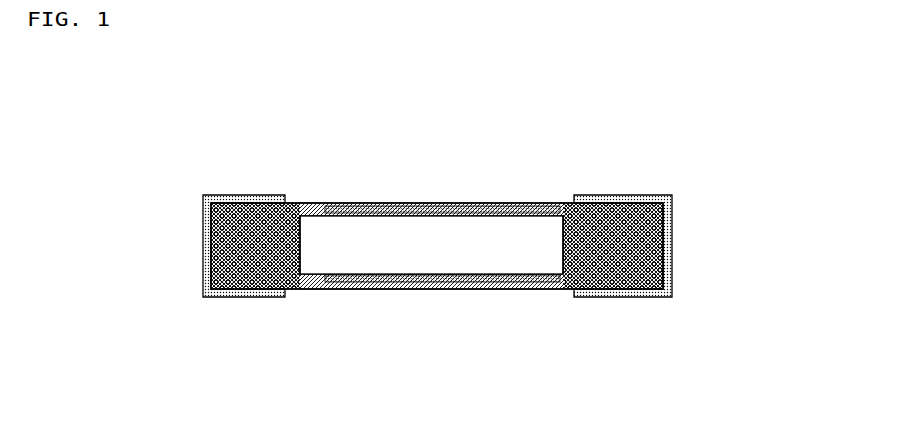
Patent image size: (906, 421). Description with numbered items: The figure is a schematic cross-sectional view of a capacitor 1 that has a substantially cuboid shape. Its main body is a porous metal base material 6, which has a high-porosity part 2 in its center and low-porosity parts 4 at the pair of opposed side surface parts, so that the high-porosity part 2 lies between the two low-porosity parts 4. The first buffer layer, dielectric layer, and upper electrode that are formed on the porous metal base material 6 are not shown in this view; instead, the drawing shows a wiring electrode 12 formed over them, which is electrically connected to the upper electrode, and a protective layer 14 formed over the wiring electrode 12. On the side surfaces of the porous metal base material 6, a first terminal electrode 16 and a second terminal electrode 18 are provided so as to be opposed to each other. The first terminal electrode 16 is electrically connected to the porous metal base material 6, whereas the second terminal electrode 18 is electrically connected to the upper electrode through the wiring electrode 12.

The capacitor 1 is at (180, 190).
The high-porosity part 2 is at (325, 222).
The low-porosity parts 4 is at (275, 210).
The porous metal base material 6 is at (396, 122).
The wiring electrode 12 is at (477, 203).
The protective layer 14 is at (555, 203).
The first terminal electrode 16 is at (203, 253).
The second terminal electrode 18 is at (672, 282).